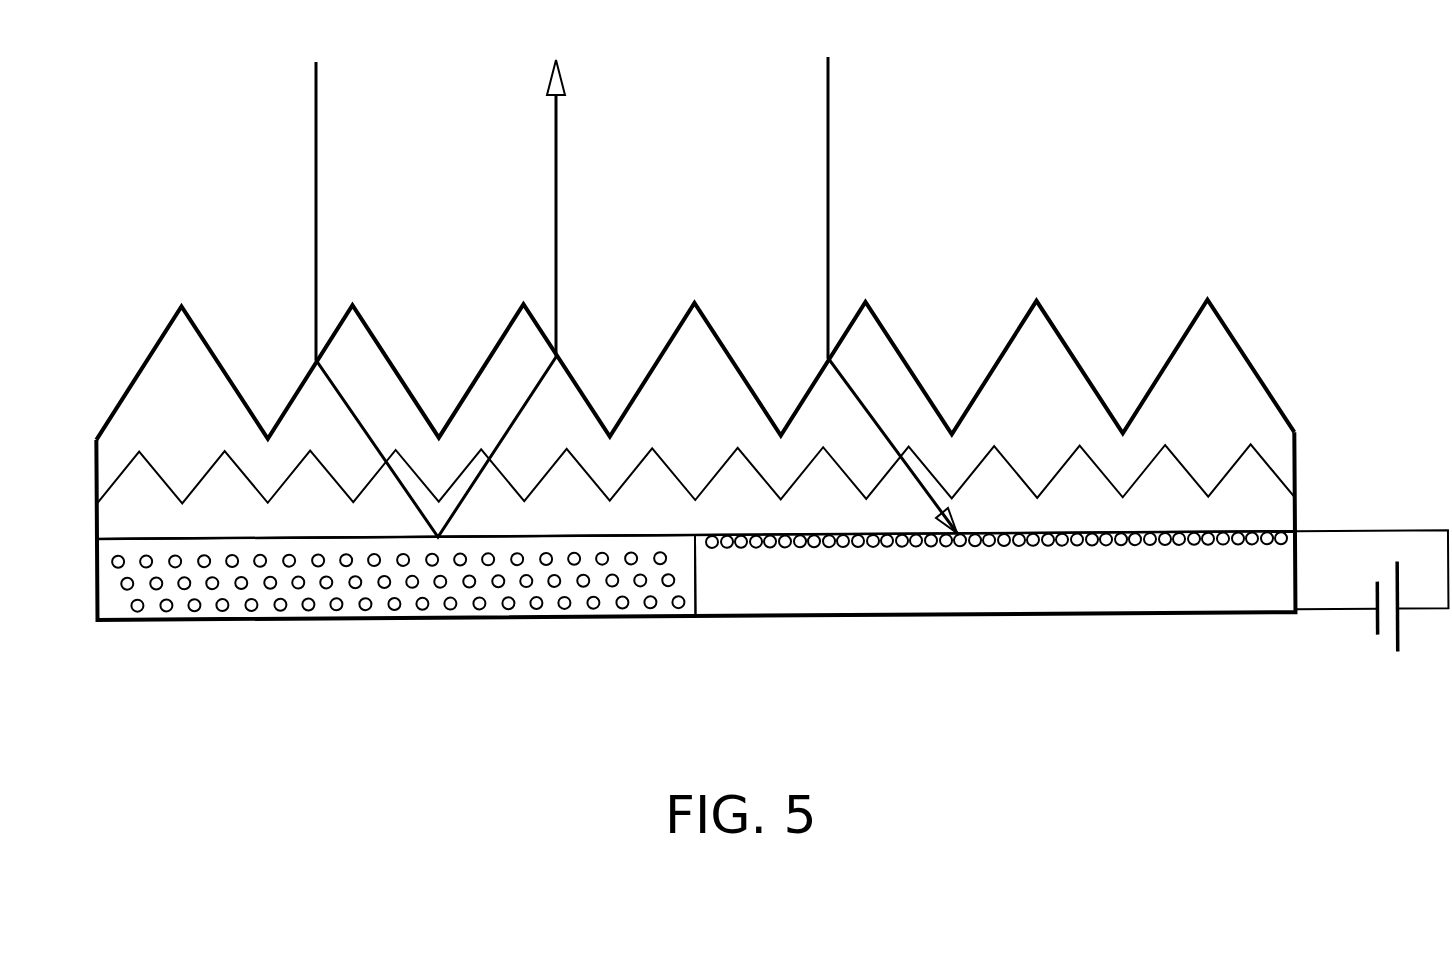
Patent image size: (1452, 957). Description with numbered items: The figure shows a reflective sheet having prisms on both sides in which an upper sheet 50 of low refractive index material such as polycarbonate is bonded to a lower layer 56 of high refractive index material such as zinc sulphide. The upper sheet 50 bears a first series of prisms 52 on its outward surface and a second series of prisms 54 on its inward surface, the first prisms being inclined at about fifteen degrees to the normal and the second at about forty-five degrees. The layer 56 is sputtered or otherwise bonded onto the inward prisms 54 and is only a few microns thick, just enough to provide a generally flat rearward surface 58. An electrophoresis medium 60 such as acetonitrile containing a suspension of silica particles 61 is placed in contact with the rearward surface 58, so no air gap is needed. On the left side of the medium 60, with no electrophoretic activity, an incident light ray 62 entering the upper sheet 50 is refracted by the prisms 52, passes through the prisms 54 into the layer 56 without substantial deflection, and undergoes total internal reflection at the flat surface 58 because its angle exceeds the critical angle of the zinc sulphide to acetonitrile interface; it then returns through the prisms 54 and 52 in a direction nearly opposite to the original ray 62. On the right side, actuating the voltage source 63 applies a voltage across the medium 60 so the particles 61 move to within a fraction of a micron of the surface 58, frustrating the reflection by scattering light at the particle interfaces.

The upper sheet 50 is at (1225, 398).
The first series of prisms 52 is at (1073, 333).
The second series of prisms 54 is at (1191, 481).
The lower layer 56 is at (1260, 517).
The flat rearward surface 58 is at (223, 543).
The electrophoresis medium 60 is at (400, 607).
The particles 61 is at (612, 602).
The incident light ray 62 is at (316, 190).
The voltage source 63 is at (1404, 658).